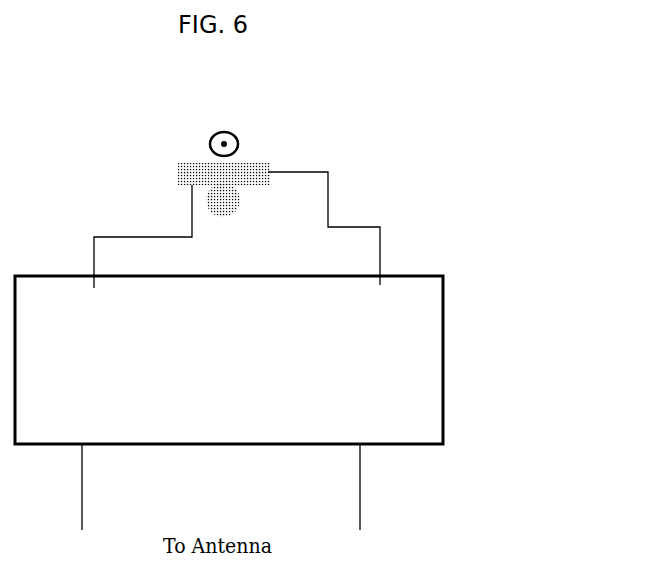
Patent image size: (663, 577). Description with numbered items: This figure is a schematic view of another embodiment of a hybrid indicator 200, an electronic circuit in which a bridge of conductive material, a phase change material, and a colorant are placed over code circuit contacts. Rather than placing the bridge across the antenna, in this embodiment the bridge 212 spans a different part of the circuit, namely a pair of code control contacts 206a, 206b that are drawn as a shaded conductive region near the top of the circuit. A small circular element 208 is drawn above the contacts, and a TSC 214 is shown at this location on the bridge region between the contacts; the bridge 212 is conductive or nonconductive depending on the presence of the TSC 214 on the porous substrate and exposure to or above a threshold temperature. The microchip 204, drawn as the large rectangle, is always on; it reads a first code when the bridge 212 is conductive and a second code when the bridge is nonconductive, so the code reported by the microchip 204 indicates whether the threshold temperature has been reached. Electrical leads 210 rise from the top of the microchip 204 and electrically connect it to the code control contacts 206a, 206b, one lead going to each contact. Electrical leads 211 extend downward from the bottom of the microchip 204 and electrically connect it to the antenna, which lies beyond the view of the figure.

The hybrid indicator 200 is at (500, 170).
The microchip 204 is at (445, 325).
The code control contact 206a is at (178, 173).
The code control contact 206b is at (268, 184).
The via / contact pad 208 is at (212, 131).
The electrical leads 210 is at (93, 241).
The electrical leads 211 is at (79, 506).
The bridge 212 is at (284, 151).
The TSC 214 is at (238, 133).